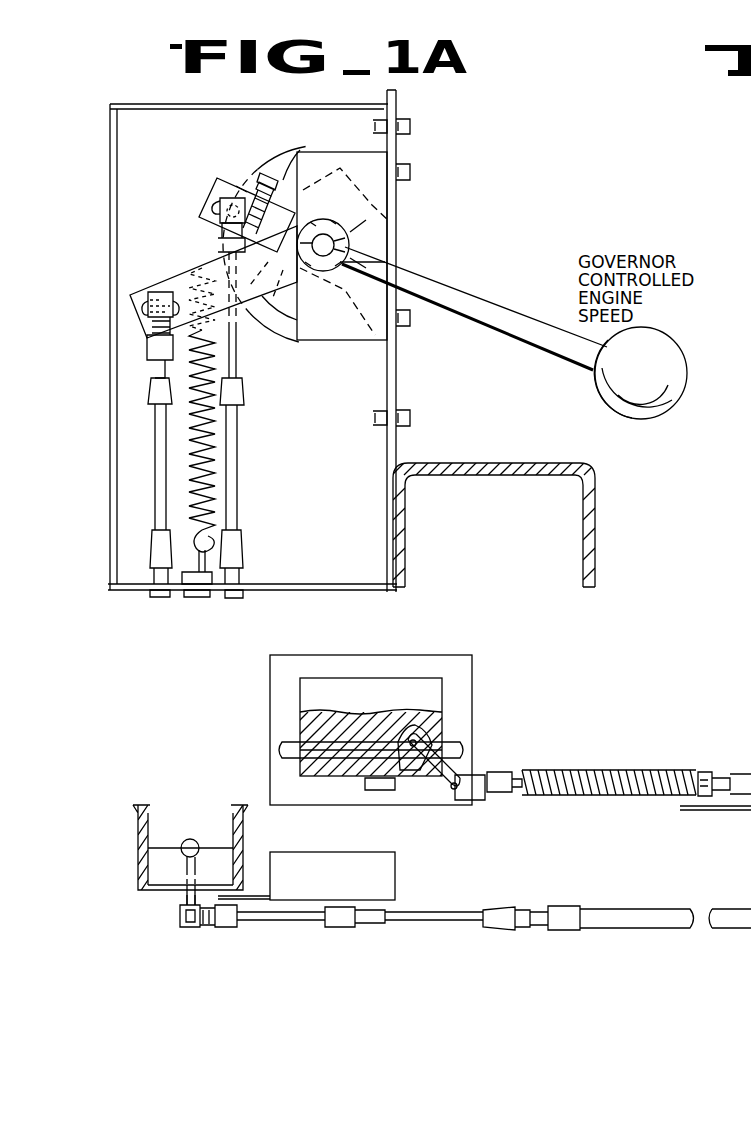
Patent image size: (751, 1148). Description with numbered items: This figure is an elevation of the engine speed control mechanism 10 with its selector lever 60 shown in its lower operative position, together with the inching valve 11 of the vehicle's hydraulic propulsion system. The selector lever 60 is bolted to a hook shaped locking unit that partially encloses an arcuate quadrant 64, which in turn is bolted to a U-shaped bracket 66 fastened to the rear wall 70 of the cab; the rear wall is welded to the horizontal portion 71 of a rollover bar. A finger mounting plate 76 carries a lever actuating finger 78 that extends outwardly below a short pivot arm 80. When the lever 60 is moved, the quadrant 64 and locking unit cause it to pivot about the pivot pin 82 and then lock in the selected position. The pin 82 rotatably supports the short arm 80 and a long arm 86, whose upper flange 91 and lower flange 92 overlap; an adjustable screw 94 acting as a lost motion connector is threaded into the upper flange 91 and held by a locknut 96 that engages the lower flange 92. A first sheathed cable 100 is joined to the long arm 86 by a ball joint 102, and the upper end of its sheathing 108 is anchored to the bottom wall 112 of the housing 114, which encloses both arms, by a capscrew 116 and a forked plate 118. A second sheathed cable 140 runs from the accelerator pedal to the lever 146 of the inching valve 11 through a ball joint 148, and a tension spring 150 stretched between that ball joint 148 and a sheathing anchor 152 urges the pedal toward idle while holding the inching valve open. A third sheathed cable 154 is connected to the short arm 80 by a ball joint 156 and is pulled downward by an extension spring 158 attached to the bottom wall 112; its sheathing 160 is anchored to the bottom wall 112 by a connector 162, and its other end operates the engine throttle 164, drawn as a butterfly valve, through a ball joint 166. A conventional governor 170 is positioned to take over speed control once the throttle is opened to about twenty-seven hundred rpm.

The engine speed control mechanism 10 is at (432, 130).
The inching valve 11 is at (447, 712).
The selector lever 60 is at (478, 322).
The arcuate quadrant 64 is at (270, 170).
The U-shaped bracket 66 is at (383, 197).
The rear wall 70 is at (388, 380).
The horizontal portion of rollover bar 71 is at (500, 466).
The finger mounting plate 76 is at (370, 221).
The lever actuating finger 78 is at (286, 245).
The short pivot arm 80 is at (345, 242).
The pivot pin 82 is at (386, 262).
The long arm 86 is at (174, 283).
The upper flange 91 is at (238, 185).
The lower flange 92 is at (249, 391).
The adjustable screw 94 is at (294, 160).
The locknut 96 is at (327, 180).
The first sheathed cable 100 is at (155, 365).
The ball joint 102 is at (148, 303).
The sheathing 108 is at (150, 594).
The bottom wall 112 is at (372, 588).
The housing 114 is at (186, 103).
The capscrew 116 is at (200, 600).
The forked plate 118 is at (148, 573).
The second sheathed cable 140 is at (515, 778).
The lever 146 is at (441, 790).
The ball joint 148 is at (470, 800).
The tension spring 150 is at (588, 774).
The sheathing anchor 152 is at (706, 806).
The third sheathed cable 154 is at (240, 372).
The ball joint 156 is at (220, 212).
The extension spring 158 is at (216, 443).
The sheathing 160 is at (240, 594).
The connector 162 is at (246, 580).
The throttle 164 is at (200, 840).
The ball joint 166 is at (180, 908).
The governor 170 is at (284, 854).